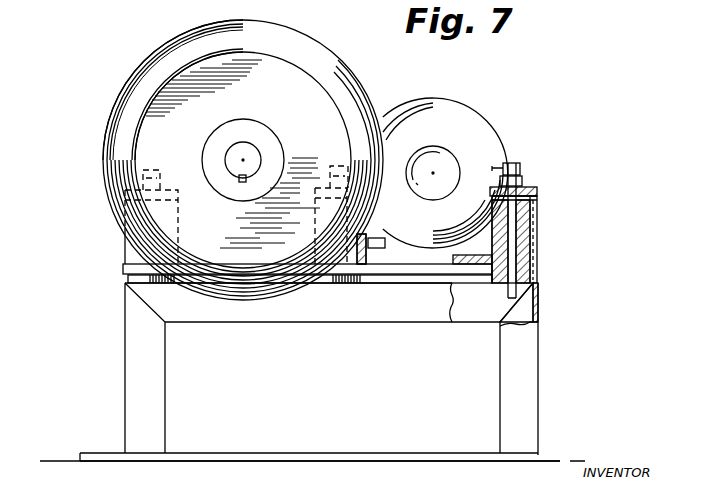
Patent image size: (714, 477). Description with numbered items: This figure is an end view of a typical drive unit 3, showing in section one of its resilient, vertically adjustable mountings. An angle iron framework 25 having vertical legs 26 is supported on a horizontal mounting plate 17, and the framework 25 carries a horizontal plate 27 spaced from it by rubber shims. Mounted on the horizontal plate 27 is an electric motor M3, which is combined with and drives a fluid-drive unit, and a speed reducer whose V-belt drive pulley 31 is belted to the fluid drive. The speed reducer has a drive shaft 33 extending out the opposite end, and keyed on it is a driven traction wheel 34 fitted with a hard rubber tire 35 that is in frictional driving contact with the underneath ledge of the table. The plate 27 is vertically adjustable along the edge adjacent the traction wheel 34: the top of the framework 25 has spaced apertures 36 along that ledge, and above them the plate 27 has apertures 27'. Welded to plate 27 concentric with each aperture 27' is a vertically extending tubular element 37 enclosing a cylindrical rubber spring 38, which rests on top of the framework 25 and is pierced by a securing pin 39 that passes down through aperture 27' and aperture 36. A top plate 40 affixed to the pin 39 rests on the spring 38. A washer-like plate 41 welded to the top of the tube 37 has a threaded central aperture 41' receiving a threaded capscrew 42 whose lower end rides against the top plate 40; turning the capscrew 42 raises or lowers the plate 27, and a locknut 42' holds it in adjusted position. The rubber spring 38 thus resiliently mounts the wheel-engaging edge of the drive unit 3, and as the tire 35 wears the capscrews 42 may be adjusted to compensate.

The drive unit 3 is at (215, 151).
The driven traction wheel 34 is at (269, 66).
The hard rubber tire 35 is at (317, 54).
The drive shaft 33 is at (248, 143).
The V-belt drive pulley 31 is at (241, 182).
The electric motor M3 is at (464, 88).
The threaded capscrew 42 is at (481, 159).
The locknut 42' is at (529, 161).
The threaded central aperture 41' is at (535, 175).
The washer-like plate 41 is at (536, 186).
The top plate 40 is at (530, 206).
The tubular element 37 is at (537, 226).
The cylindrical rubber spring 38 is at (333, 278).
The horizontal plate 27 is at (351, 270).
The aperture 27' is at (472, 253).
The aperture 36 is at (506, 288).
The securing pin 39 is at (533, 294).
The angle iron framework 25 is at (541, 305).
The vertical legs 26 is at (541, 405).
The horizontal mounting plate 17 is at (303, 453).